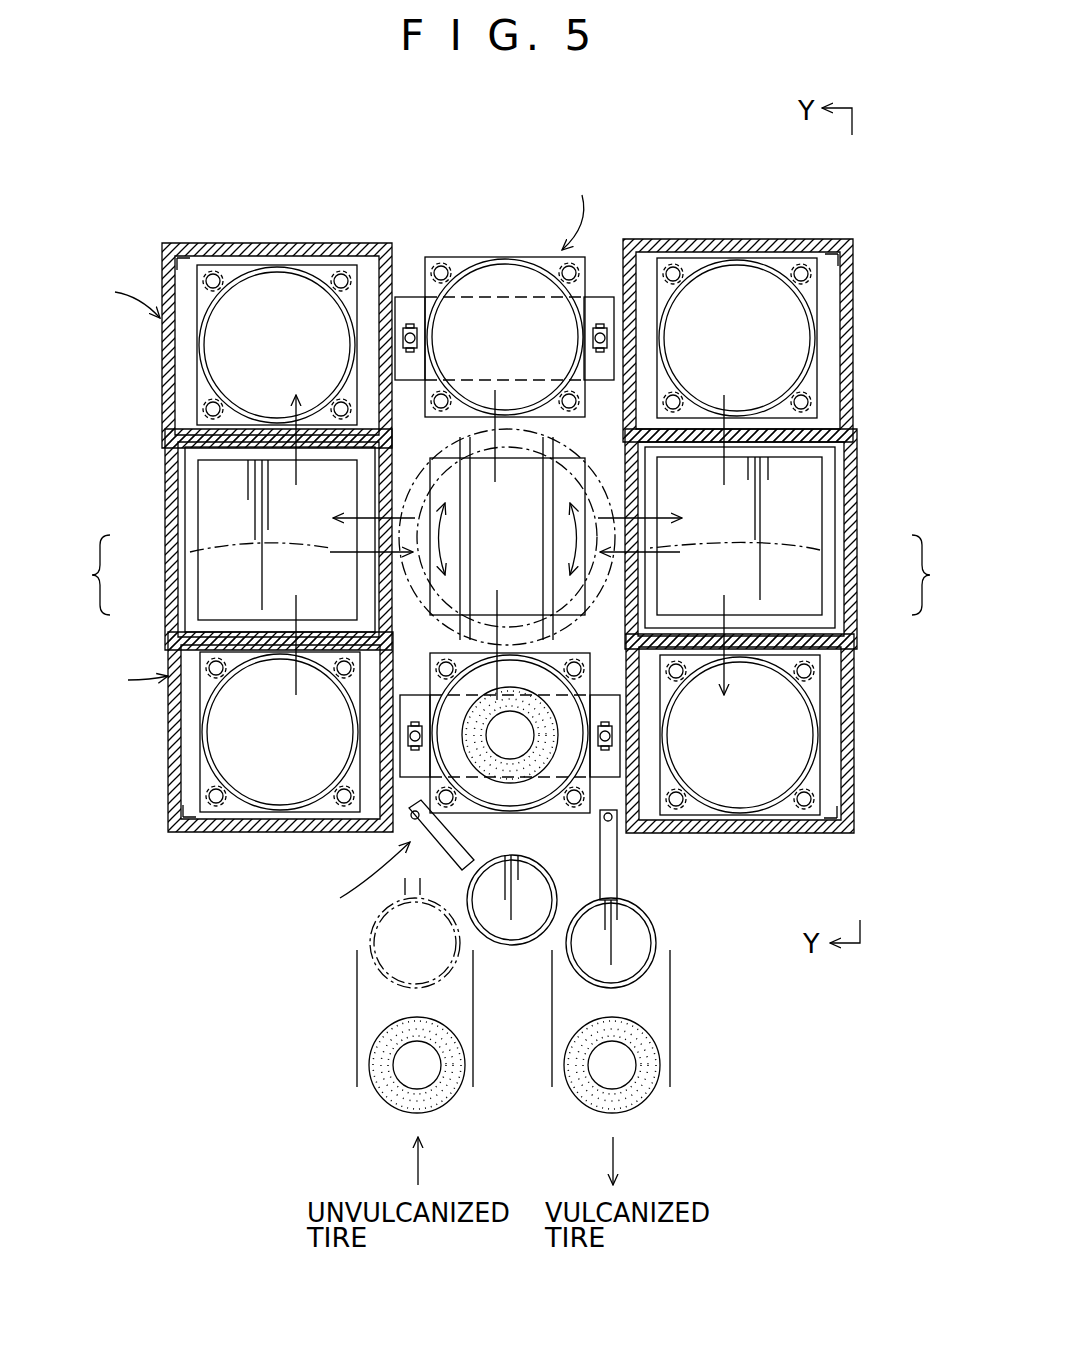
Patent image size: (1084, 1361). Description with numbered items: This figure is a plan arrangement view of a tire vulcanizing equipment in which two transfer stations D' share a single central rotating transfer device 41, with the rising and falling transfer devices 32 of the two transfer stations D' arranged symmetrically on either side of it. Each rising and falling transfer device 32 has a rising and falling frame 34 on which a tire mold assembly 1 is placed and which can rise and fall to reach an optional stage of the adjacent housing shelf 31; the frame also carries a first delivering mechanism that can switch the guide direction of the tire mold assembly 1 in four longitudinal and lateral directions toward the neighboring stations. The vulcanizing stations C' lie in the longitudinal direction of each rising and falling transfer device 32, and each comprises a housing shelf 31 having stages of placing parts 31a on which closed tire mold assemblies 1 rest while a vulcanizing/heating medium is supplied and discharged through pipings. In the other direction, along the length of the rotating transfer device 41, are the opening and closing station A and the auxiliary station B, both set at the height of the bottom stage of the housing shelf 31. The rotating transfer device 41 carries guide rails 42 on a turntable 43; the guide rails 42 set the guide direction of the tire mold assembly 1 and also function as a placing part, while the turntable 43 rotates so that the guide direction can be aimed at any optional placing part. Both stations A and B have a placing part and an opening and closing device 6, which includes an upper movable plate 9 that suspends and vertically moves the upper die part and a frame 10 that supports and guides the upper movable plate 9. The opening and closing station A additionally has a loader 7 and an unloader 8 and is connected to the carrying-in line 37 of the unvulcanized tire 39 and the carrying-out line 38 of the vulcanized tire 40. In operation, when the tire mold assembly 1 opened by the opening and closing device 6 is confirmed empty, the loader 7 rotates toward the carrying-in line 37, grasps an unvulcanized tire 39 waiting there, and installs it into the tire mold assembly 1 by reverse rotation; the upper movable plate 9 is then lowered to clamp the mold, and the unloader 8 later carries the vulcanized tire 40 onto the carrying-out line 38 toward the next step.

The tire mold assembly 1 is at (220, 370).
The opening and closing device 6 is at (606, 293).
The loader 7 is at (380, 943).
The unloader 8 is at (648, 938).
The upper movable plate 9 is at (512, 297).
The frame 10 is at (403, 297).
The housing shelf 31 is at (168, 340).
The placing parts 31a is at (183, 275).
The rising and falling transfer device 32 is at (178, 602).
The rising and falling frame 34 is at (215, 482).
The carrying-in line 37 is at (367, 1015).
The carrying-out line 38 is at (658, 1013).
The unvulcanized tire 39 is at (395, 1108).
The vulcanized tire 40 is at (510, 783).
The rotating transfer device 41 is at (190, 552).
The guide rails 42 is at (452, 615).
The turntable 43 is at (555, 600).
The opening and closing station A is at (366, 880).
The auxiliary station B is at (575, 206).
The vulcanizing station C' is at (123, 483).
The transfer station D' is at (518, 575).